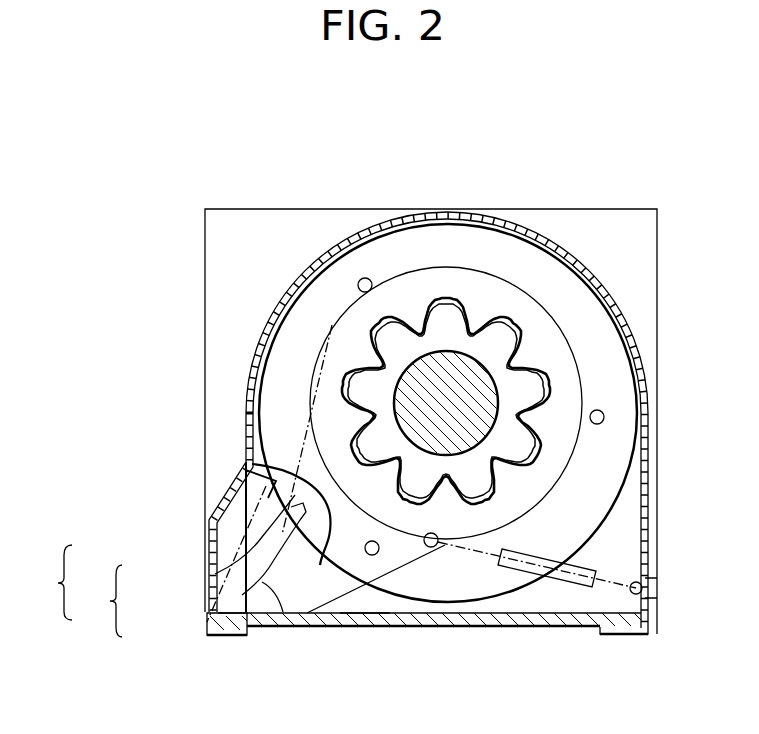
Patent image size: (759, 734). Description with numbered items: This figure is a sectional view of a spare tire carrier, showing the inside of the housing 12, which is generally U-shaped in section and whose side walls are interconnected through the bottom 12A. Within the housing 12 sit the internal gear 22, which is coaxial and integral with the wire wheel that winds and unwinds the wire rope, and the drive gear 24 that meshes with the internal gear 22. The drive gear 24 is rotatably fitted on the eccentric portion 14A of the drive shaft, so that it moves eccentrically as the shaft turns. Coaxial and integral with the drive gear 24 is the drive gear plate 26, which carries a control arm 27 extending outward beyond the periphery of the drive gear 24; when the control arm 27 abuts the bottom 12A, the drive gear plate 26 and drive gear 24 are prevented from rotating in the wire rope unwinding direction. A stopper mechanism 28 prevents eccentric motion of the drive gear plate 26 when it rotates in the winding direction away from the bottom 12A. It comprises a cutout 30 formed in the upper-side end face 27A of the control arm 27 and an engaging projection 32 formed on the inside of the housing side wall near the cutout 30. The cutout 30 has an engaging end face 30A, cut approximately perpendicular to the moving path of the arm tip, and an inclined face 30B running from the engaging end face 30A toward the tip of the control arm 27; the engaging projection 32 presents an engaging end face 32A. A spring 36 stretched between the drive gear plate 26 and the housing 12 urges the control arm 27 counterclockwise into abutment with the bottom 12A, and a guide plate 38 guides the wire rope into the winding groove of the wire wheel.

The housing 12 is at (506, 627).
The bottom 12A is at (362, 606).
The eccentric portion 14A is at (472, 372).
The internal gear 22 is at (312, 410).
The drive gear 24 is at (383, 343).
The drive gear plate 26 is at (440, 552).
The control arm 27 is at (306, 612).
The upper-side end face 27A is at (262, 608).
The stopper mechanism 28 is at (165, 531).
The cutout 30 is at (187, 567).
The engaging end face 30A is at (215, 574).
The inclined face 30B is at (207, 626).
The engaging projection 32 is at (245, 500).
The engaging end face 32A is at (266, 486).
The spring 36 is at (577, 585).
The guide plate 38 is at (429, 213).